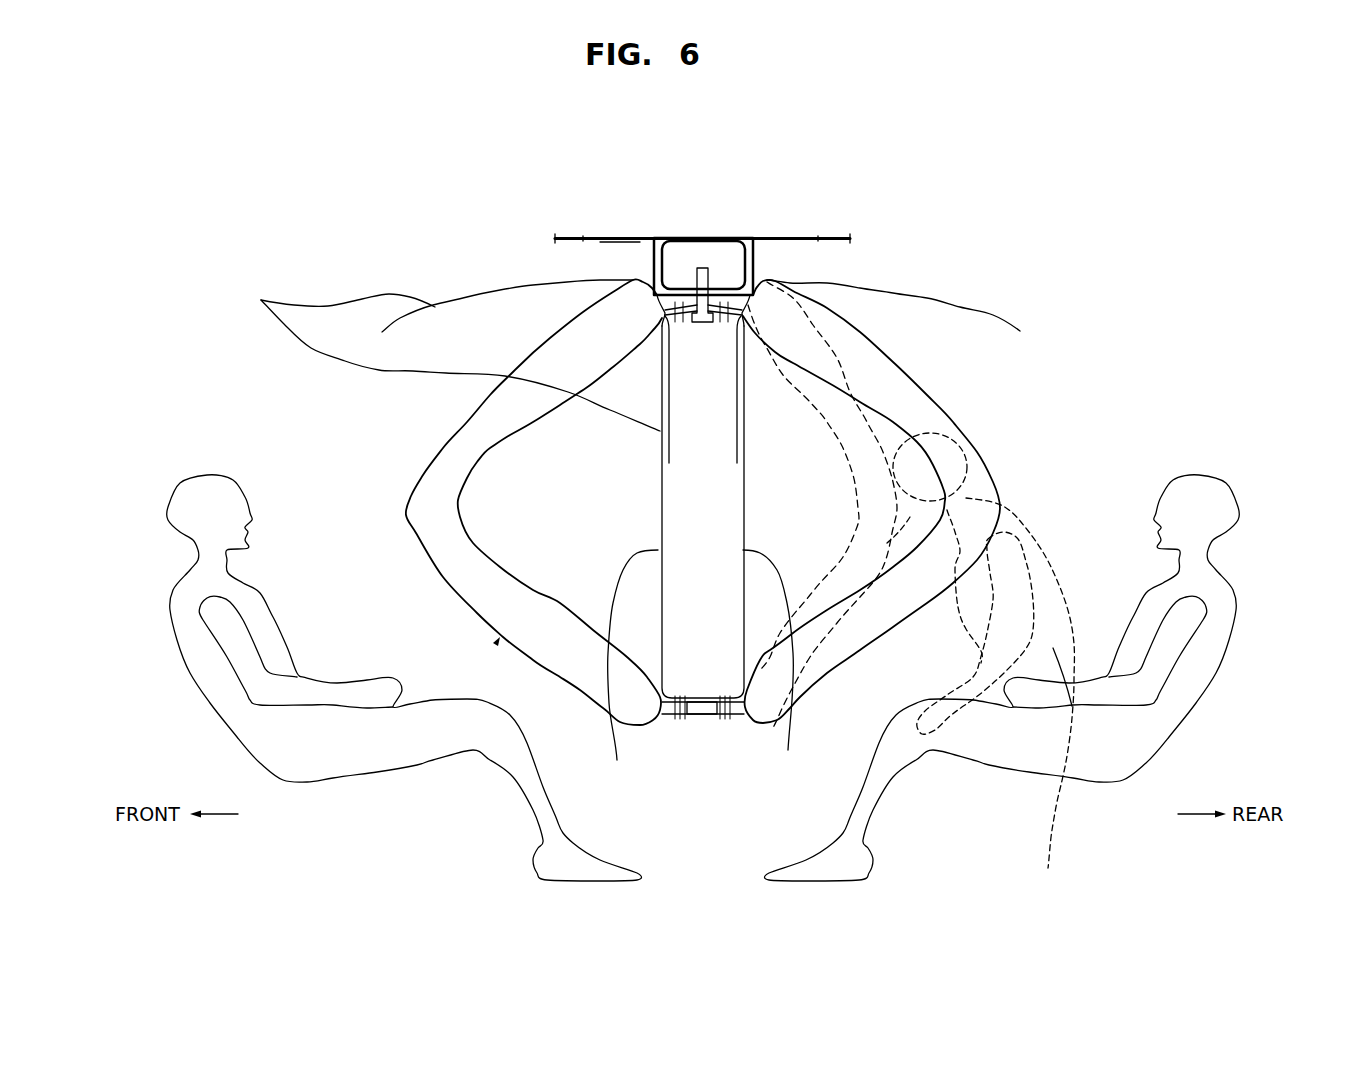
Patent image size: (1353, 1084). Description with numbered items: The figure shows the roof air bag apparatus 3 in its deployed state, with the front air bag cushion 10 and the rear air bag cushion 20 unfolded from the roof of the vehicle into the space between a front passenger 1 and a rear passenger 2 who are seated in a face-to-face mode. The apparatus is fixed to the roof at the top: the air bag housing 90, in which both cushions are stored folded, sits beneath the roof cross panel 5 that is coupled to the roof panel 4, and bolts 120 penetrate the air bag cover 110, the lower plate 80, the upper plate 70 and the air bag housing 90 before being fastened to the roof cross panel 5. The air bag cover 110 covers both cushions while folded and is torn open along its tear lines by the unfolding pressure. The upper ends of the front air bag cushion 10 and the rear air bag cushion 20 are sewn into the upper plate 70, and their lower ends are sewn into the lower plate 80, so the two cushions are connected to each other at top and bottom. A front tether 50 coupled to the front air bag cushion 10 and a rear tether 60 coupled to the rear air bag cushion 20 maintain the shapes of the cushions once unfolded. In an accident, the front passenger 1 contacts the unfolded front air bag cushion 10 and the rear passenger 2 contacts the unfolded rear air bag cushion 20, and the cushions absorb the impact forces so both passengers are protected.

The front passenger 1 is at (322, 762).
The rear passenger 2 is at (1060, 649).
The roof air bag apparatus 3 is at (500, 637).
The roof panel 4 is at (833, 236).
The roof cross panel 5 is at (663, 267).
The front air bag cushion 10 is at (442, 432).
The rear air bag cushion 20 is at (858, 392).
The front tether 50 is at (617, 760).
The rear tether 60 is at (788, 750).
The upper plate 70 is at (713, 303).
The lower plate 80 is at (733, 715).
The air bag housing 90 is at (625, 237).
The air bag cover 110 is at (920, 240).
The bolts 120 is at (702, 267).